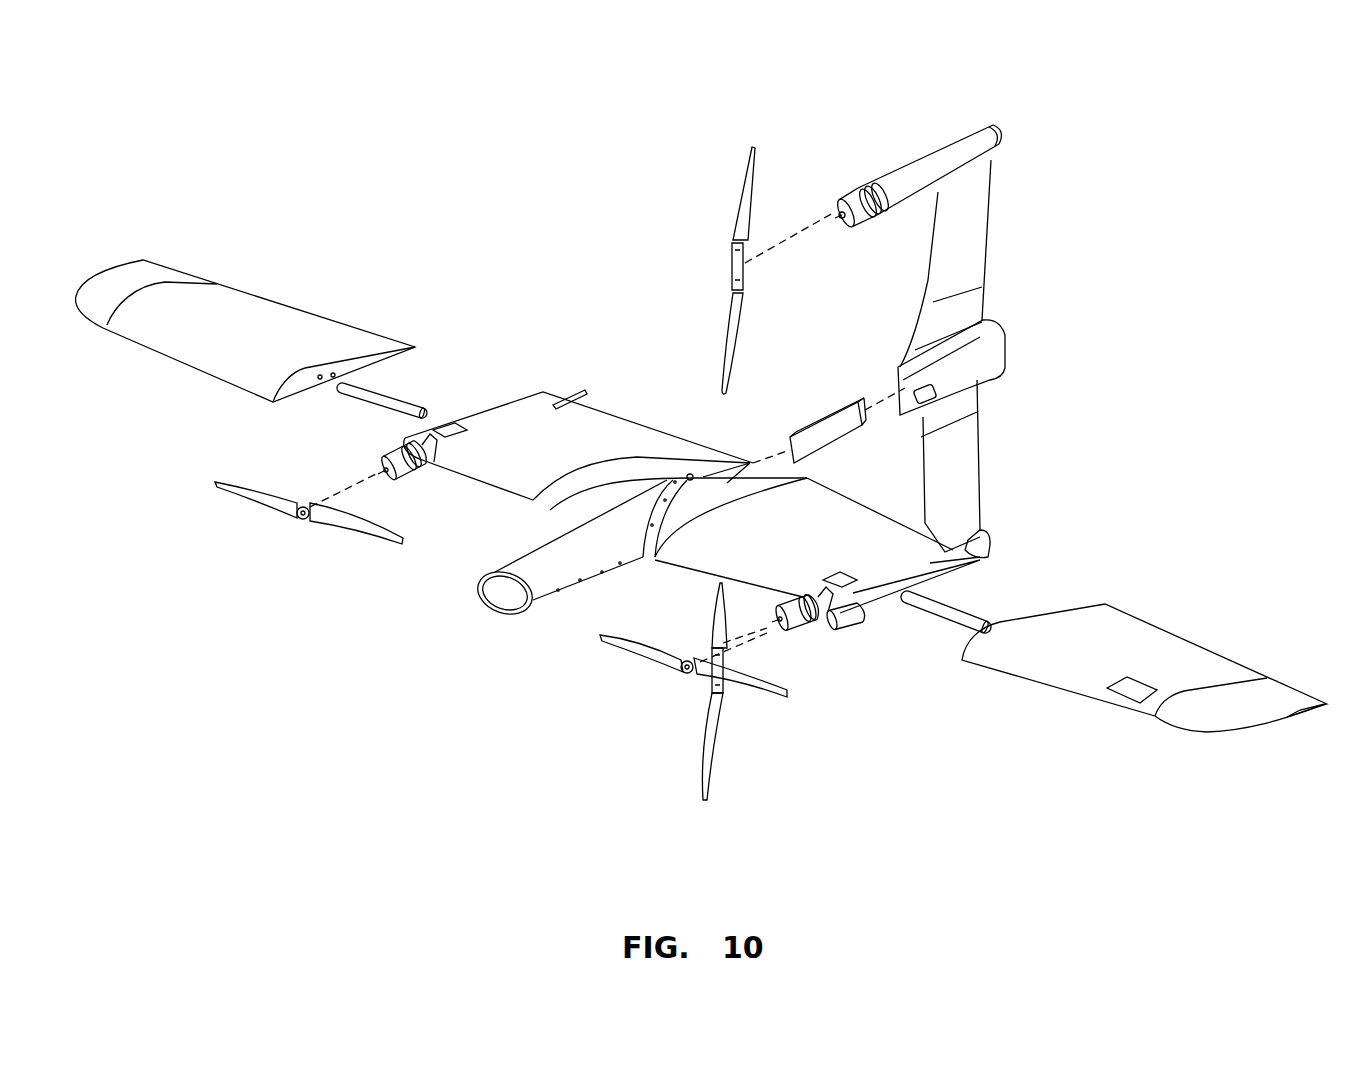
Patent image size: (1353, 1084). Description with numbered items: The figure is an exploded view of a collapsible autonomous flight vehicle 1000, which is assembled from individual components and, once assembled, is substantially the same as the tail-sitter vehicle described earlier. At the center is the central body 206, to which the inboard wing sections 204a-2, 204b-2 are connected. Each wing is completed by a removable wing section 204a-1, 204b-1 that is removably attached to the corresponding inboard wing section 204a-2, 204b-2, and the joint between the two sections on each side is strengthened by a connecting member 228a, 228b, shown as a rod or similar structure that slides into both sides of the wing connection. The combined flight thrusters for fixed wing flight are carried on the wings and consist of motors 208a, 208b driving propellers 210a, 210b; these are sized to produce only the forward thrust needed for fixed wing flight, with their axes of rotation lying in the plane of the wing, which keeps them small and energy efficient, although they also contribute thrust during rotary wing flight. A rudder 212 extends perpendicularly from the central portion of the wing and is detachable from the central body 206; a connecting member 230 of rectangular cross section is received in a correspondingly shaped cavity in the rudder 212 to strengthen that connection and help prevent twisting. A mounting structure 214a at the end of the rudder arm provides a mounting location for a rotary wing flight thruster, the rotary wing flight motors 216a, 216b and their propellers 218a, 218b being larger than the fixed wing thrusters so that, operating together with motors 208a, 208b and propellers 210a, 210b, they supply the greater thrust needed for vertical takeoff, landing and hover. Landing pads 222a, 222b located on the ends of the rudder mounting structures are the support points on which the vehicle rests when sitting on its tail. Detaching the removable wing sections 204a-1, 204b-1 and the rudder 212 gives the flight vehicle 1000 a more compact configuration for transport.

The flight vehicle 1000 is at (641, 65).
The removable wing section 204a-1 is at (600, 410).
The wing section 204a-2 is at (130, 340).
The removable wing section 204b-1 is at (870, 523).
The wing section 204b-2 is at (1080, 693).
The central body 206 is at (510, 597).
The motor 208a is at (407, 470).
The motor 208b is at (793, 597).
The propeller 210a is at (343, 527).
The propeller 210b is at (623, 643).
The rudder 212 is at (1038, 244).
The mounting structure 214a is at (933, 160).
The rotary wing flight motor 216a is at (840, 197).
The rotary wing flight motor 216b is at (840, 637).
The propeller 218a is at (753, 143).
The propeller 218b is at (713, 763).
The landing pad 222a is at (998, 128).
The landing pad 222b is at (987, 531).
The connecting member 228a is at (395, 397).
The connecting member 228b is at (940, 623).
The connecting member 230 is at (807, 418).